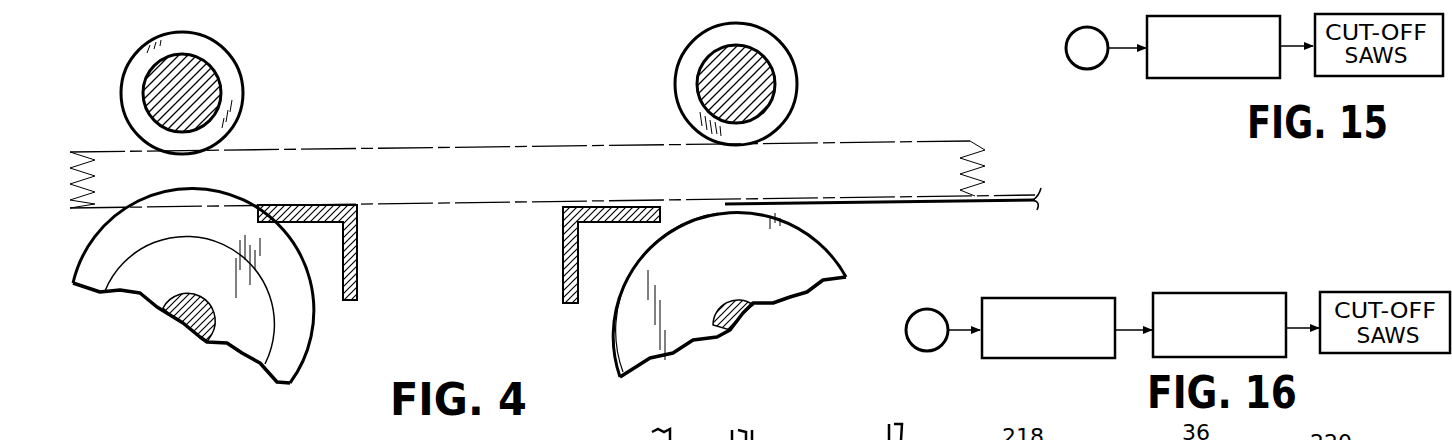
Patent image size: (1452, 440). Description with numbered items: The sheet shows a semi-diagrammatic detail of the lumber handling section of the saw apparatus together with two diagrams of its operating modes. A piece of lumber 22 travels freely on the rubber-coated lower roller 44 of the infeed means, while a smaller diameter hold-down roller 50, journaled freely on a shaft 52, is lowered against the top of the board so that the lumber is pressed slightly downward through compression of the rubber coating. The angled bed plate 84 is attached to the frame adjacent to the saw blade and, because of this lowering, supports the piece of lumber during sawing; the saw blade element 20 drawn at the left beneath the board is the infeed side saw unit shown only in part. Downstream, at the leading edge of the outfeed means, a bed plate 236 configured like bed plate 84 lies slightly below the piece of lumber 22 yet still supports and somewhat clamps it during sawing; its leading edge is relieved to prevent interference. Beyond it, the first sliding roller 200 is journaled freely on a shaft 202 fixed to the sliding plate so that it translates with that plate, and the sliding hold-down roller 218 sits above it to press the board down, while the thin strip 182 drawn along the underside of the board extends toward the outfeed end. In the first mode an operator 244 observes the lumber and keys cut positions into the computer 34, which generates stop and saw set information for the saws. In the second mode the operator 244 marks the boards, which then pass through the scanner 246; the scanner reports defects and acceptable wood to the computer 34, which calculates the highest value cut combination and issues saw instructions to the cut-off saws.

In FIG. 4, the circular saw blade 20 is at (193, 314).
In FIG. 4, the piece of lumber 22 is at (508, 147).
In FIG. 4, the lower roller 44 is at (148, 280).
In FIG. 4, the hold-down roller 50 is at (233, 77).
In FIG. 4, the shaft 52 is at (158, 83).
In FIG. 4, the angled bed plate 84 is at (353, 248).
In FIG. 4, the thin strip 182 is at (998, 206).
In FIG. 4, the first sliding roller 200 is at (792, 282).
In FIG. 4, the shaft 202 is at (747, 315).
In FIG. 4, the sliding hold-down roller 218 is at (790, 82).
In FIG. 4, the bed plate 236 is at (573, 252).
In FIG. 15, the operator 244 is at (1068, 62).
In FIG. 16, the operator 244 is at (930, 310).
In FIG. 16, the scanner 246 is at (1062, 303).
In FIG. 15, the computer 34 is at (1192, 68).
In FIG. 16, the computer 34 is at (1210, 302).